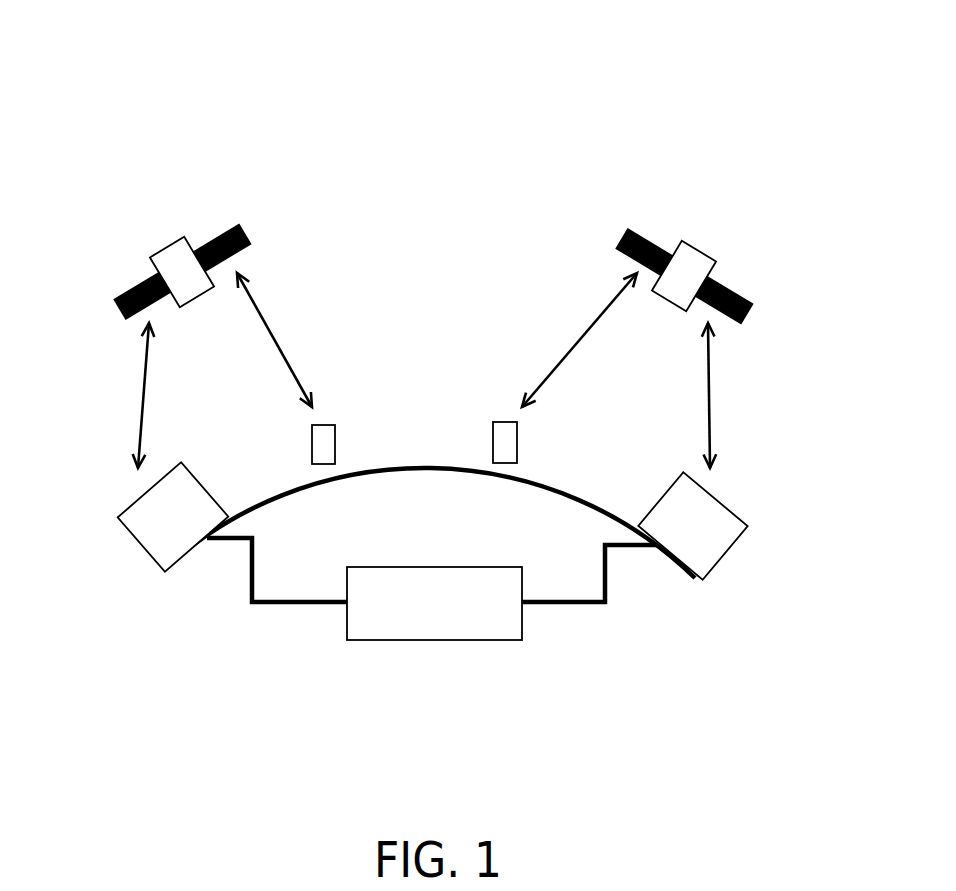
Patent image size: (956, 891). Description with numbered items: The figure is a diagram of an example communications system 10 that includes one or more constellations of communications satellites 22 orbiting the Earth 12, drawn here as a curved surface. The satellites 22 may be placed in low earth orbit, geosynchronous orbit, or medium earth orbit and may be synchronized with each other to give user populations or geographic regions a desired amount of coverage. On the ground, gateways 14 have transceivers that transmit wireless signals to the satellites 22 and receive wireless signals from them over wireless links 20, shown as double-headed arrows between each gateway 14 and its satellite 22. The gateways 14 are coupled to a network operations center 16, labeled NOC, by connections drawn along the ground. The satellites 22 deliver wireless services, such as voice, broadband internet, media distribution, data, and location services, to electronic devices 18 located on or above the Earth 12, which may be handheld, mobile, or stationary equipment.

The communications system 10 is at (380, 98).
The Earth 12 is at (273, 498).
The gateway 14 is at (138, 542).
The network operations center 16 is at (497, 638).
The electronic device 18 is at (327, 462).
The wireless link 20 is at (275, 353).
The communications satellite 22 is at (167, 250).